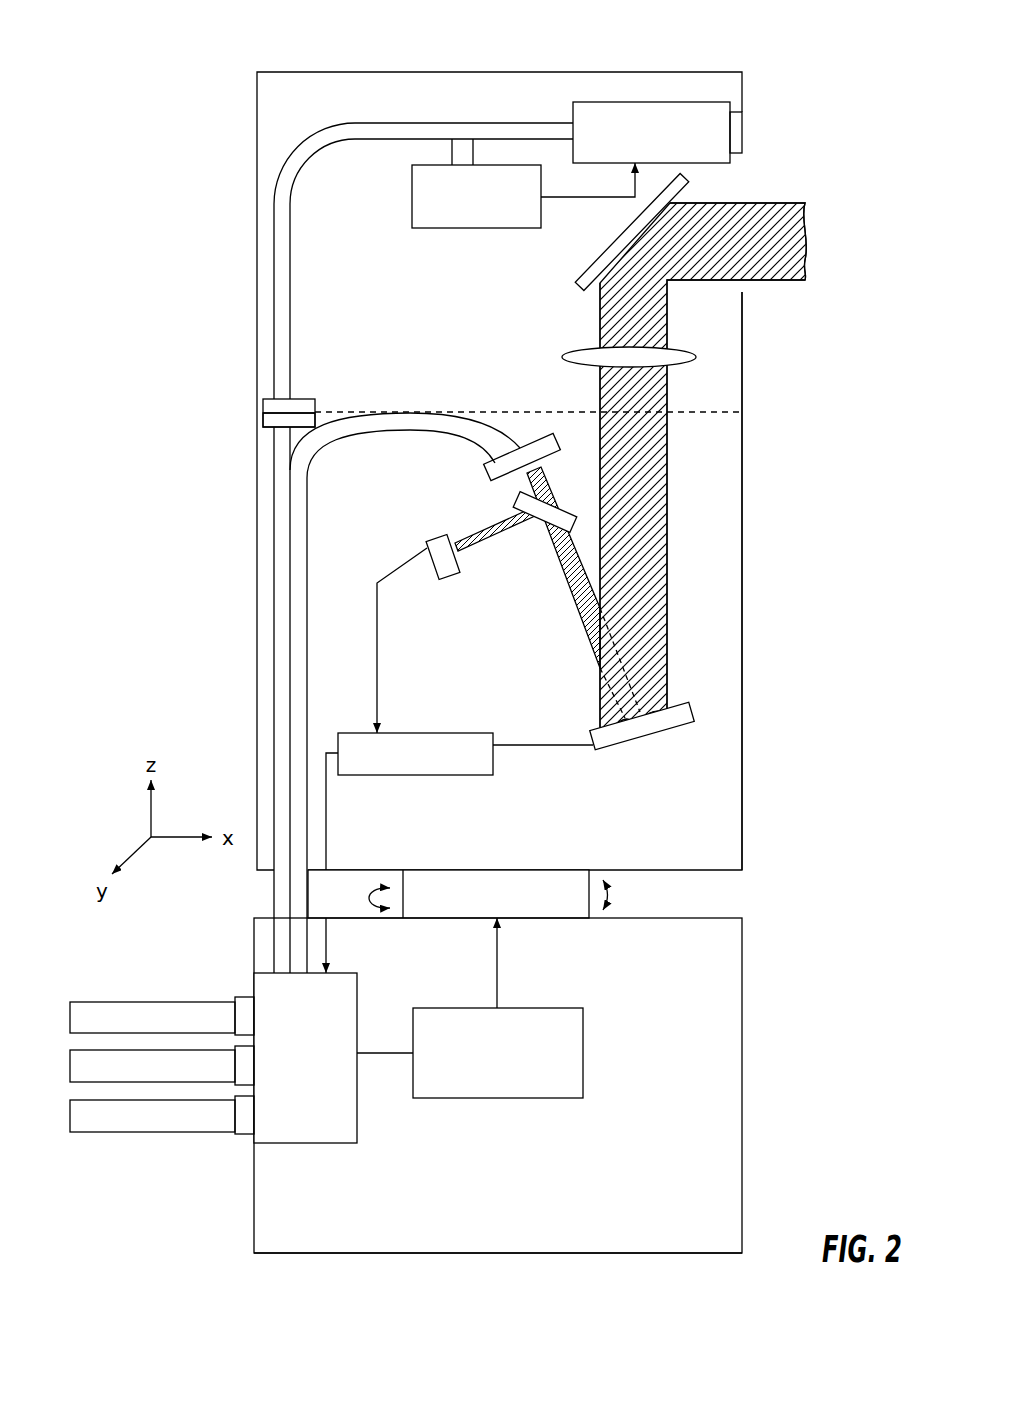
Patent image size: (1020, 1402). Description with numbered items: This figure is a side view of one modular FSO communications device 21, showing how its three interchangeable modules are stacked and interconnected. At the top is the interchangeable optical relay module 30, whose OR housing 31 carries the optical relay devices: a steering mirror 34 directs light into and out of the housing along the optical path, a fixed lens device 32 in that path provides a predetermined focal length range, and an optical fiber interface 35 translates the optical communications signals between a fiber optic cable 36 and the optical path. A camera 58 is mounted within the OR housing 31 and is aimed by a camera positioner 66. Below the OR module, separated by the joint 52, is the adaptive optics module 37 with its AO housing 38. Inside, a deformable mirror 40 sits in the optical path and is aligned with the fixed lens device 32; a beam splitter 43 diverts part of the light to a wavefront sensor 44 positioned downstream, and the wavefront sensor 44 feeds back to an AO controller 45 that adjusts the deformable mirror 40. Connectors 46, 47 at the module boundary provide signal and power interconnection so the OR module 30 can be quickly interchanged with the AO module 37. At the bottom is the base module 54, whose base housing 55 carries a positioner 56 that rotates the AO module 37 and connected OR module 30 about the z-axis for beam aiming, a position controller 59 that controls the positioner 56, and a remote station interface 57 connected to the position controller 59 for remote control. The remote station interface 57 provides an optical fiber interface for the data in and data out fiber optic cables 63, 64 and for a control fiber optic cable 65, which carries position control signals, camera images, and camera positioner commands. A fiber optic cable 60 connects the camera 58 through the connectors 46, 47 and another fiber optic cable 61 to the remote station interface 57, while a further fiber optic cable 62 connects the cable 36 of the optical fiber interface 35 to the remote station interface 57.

The modular FSO communications device 21 is at (828, 74).
The interchangeable optical relay (OR) module 30 is at (770, 376).
The OR housing 31 is at (742, 322).
The fixed lens device 32 is at (565, 352).
The steering mirror 34 is at (680, 192).
The optical fiber interface 35 is at (485, 463).
The fiber optic cable 36 is at (310, 563).
The adaptive optics (AO) module 37 is at (770, 757).
The AO housing 38 is at (742, 812).
The deformable mirror 40 is at (690, 706).
The beam splitter 43 is at (520, 498).
The wavefront sensor 44 is at (450, 576).
The AO controller 45 is at (447, 733).
The connector 46 is at (263, 405).
The connector 47 is at (263, 420).
The joint 52 is at (742, 412).
The base module 54 is at (762, 1053).
The base housing 55 is at (742, 950).
The positioner 56 is at (592, 873).
The remote station interface 57 is at (254, 1138).
The camera 58 is at (646, 102).
The position controller 59 is at (583, 1030).
The fiber optic cable 60 is at (257, 313).
The fiber optic cable 61 is at (273, 747).
The fiber optic cable 62 is at (310, 695).
The data in fiber optic cable 63 is at (137, 1002).
The data out fiber optic cable 64 is at (76, 1050).
The control fiber optic cable 65 is at (76, 1100).
The camera positioner 66 is at (412, 197).